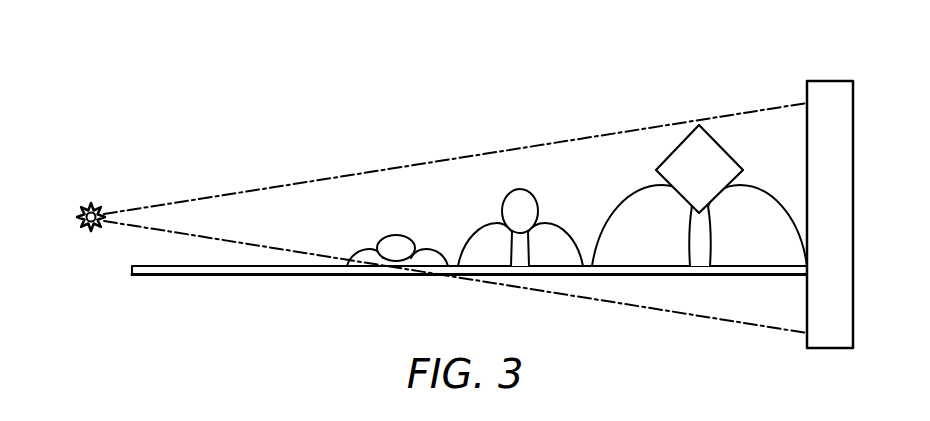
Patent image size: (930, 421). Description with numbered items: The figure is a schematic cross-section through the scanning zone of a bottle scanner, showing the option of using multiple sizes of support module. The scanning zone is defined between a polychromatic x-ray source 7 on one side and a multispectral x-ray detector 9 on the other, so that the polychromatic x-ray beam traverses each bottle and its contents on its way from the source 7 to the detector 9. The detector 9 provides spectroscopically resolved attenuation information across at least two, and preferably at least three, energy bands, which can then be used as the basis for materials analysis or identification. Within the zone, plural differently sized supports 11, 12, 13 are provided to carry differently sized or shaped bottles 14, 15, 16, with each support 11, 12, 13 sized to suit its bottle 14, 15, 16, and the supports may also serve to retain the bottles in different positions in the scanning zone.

The polychromatic x-ray source 7 is at (92, 207).
The multispectral x-ray detector 9 is at (828, 80).
The support 11 is at (427, 258).
The support 12 is at (487, 257).
The support 13 is at (757, 258).
The bottle 14 is at (393, 235).
The bottle 15 is at (517, 190).
The bottle 16 is at (698, 123).